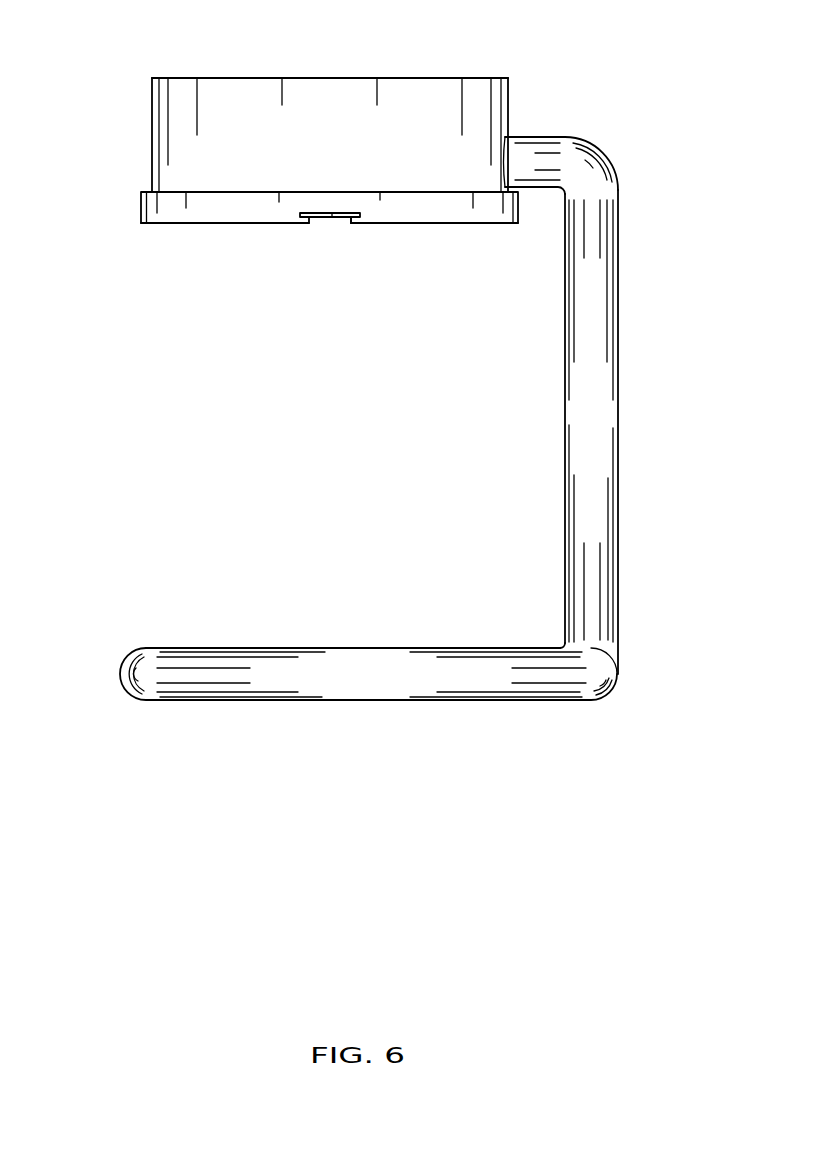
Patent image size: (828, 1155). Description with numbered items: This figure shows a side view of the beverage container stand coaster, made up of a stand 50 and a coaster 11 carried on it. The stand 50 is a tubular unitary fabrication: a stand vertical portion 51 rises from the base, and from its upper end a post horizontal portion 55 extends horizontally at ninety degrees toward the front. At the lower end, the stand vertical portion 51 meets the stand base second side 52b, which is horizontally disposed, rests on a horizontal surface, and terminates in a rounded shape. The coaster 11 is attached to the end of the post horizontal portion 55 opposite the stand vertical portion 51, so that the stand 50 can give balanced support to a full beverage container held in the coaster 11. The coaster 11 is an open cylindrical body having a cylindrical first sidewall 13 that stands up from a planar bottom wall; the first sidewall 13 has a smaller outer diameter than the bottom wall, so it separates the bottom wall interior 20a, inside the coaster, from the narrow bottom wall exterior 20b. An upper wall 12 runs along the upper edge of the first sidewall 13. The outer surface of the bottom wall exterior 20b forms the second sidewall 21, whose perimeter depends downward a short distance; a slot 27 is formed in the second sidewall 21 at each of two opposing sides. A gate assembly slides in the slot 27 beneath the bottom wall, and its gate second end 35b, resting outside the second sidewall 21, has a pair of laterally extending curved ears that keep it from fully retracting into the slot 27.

The coaster 11 is at (177, 271).
The upper wall 12 is at (153, 78).
The first sidewall 13 is at (150, 105).
The second sidewall 21 is at (140, 213).
The bottom wall interior 20a is at (222, 232).
The bottom wall exterior 20b is at (141, 223).
The slot 27 is at (330, 223).
The gate second end 35b is at (360, 223).
The stand 50 is at (442, 480).
The post horizontal portion 55 is at (570, 135).
The stand vertical portion 51 is at (618, 415).
The stand base second side 52b is at (355, 700).